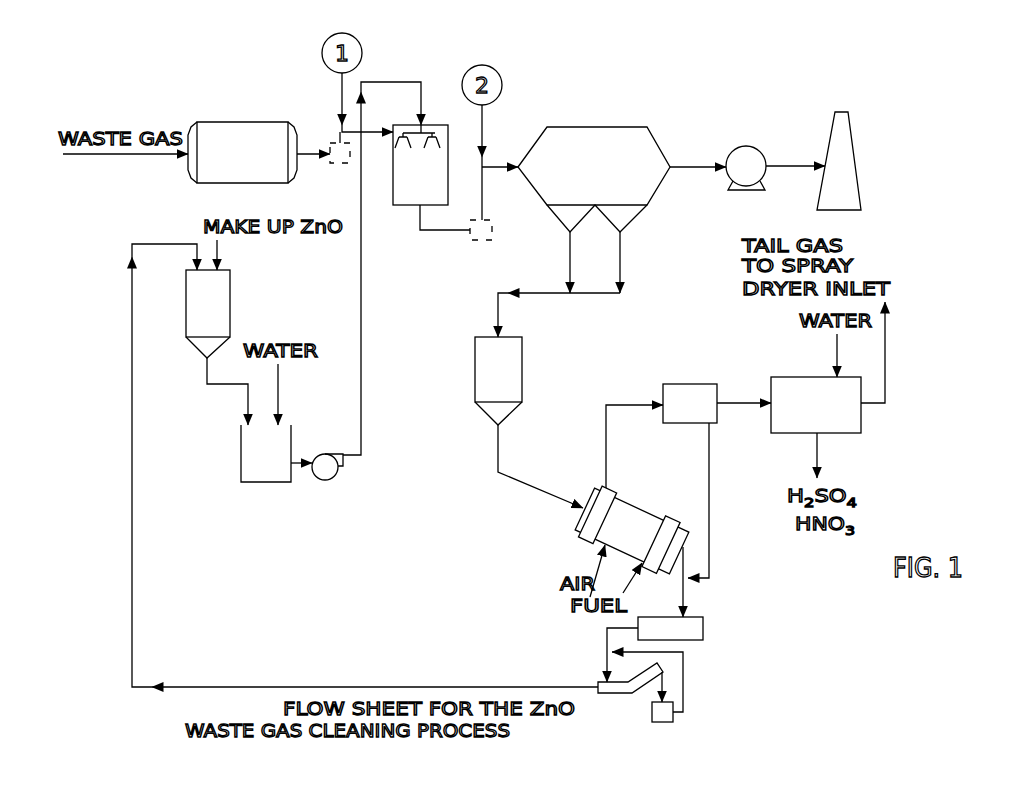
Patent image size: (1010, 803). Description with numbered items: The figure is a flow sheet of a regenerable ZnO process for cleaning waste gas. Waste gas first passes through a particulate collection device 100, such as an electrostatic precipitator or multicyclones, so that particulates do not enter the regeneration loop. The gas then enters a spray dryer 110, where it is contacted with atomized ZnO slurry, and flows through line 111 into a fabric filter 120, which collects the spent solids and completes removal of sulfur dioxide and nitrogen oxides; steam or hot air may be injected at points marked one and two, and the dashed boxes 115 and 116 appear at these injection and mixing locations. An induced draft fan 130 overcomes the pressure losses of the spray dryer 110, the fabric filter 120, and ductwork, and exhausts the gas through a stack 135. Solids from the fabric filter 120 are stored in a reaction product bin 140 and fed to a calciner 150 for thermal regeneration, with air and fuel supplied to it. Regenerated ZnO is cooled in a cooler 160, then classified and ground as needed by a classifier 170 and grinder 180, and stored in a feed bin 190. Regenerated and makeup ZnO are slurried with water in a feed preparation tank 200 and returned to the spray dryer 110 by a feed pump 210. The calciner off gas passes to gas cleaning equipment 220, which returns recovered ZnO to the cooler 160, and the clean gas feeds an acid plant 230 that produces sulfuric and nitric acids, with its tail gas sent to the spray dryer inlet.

The particulate collection device 100 is at (267, 132).
The spray dryer 110 is at (408, 195).
The line 111 is at (494, 164).
The mixing point / control box 115 is at (346, 164).
The mixing point / control box 116 is at (495, 228).
The fabric filter 120 is at (553, 130).
The induced draft fan 130 is at (757, 153).
The stack 135 is at (845, 140).
The reaction product bin 140 is at (508, 347).
The calciner 150 is at (587, 517).
The cooler 160 is at (692, 632).
The classifier 170 is at (608, 690).
The grinder 180 is at (660, 722).
The feed bin 190 is at (222, 279).
The feed preparation tank 200 is at (253, 460).
The feed pump 210 is at (321, 473).
The gas cleaning equipment 220 is at (692, 392).
The acid plant 230 is at (850, 415).